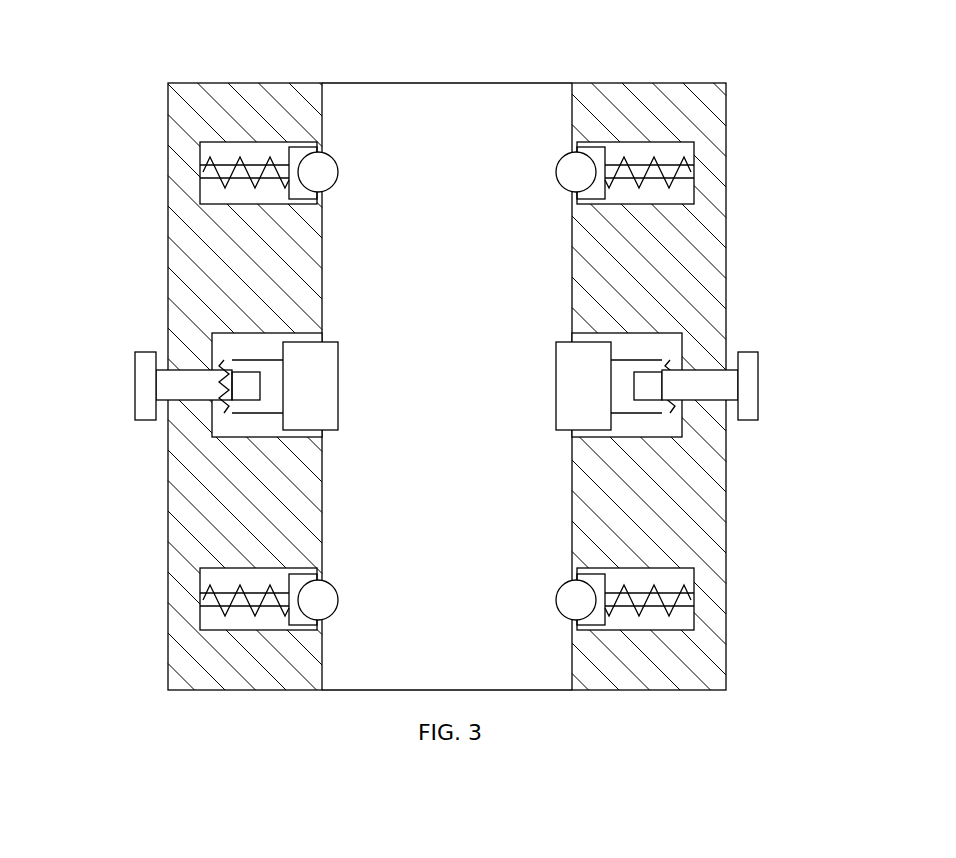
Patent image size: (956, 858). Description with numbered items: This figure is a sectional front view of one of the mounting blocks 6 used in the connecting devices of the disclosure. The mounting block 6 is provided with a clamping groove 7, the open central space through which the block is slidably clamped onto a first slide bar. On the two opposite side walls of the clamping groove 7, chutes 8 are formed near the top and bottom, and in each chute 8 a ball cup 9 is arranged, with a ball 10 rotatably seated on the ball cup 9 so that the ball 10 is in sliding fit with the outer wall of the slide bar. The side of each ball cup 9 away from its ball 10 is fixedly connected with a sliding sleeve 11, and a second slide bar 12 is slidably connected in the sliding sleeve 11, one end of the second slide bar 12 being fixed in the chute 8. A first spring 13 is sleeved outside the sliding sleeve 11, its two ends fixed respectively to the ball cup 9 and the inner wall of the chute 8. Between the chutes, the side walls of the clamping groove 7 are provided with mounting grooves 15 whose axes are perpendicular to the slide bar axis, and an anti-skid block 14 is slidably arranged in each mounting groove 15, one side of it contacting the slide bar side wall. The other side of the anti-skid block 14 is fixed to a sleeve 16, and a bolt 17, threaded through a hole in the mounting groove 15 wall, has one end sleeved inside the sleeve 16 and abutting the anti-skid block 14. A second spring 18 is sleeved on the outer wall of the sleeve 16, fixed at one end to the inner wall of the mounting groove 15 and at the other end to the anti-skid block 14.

The mounting block 6 is at (396, 386).
The clamping groove 7 is at (428, 346).
The chute 8 is at (236, 103).
The ball cup 9 is at (607, 103).
The ball 10 is at (520, 97).
The sliding sleeve 11 is at (202, 613).
The second slide bar 12 is at (178, 570).
The first spring 13 is at (192, 549).
The anti-skid block 14 is at (202, 349).
The mounting groove 15 is at (694, 349).
The sleeve 16 is at (702, 426).
The bolt 17 is at (785, 386).
The second spring 18 is at (747, 362).